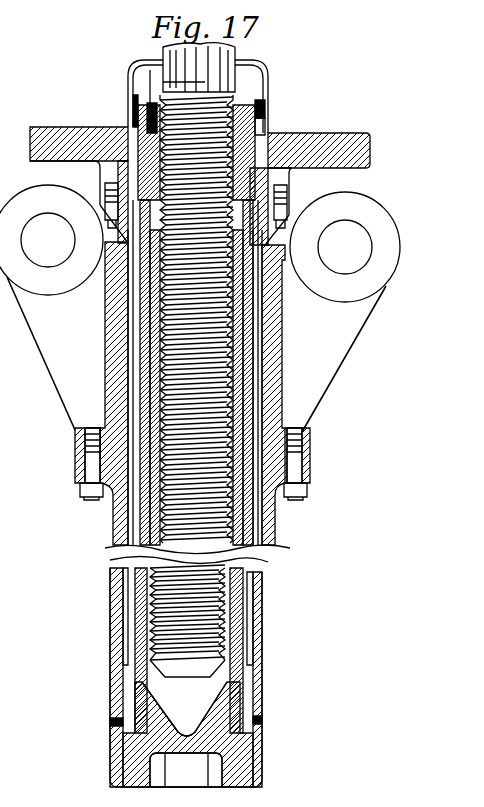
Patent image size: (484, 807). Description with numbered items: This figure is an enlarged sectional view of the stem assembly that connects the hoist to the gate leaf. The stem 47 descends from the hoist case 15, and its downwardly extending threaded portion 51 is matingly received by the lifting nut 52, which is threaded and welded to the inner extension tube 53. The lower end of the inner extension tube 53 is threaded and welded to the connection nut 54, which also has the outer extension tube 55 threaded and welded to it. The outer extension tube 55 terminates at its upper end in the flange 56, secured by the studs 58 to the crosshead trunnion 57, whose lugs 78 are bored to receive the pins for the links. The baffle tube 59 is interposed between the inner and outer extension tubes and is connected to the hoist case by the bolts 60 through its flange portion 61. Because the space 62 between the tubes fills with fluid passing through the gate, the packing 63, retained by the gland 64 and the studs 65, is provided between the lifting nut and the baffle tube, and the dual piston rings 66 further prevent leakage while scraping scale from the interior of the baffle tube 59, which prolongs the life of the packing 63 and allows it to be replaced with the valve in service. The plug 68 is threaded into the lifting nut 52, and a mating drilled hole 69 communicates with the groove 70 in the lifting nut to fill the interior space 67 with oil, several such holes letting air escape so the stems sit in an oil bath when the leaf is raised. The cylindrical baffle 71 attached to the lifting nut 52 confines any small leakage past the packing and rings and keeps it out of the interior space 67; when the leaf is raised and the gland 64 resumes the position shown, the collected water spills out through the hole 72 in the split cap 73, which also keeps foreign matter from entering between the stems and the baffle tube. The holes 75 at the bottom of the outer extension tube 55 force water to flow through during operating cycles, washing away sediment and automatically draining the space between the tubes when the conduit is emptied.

The hoist case 15 is at (357, 137).
The stem 47 is at (237, 52).
The threaded portion 51 is at (213, 600).
The nut 52 is at (262, 133).
The inner extension tube 53 is at (243, 556).
The connection nut 54 is at (240, 775).
The outer extension tube 55 is at (120, 558).
The flange 56 is at (78, 470).
The crosshead trunnion 57 is at (108, 397).
The stud 58 is at (88, 500).
The baffle tube 59 is at (140, 347).
The bolt 60 is at (110, 202).
The flange portion 61 is at (288, 205).
The space 62 is at (258, 345).
The packing 63 is at (137, 155).
The gland 64 is at (130, 76).
The stud 65 is at (140, 63).
The piston ring 66 is at (130, 187).
The interior space 67 is at (250, 385).
The filling plug 68 is at (255, 88).
The drilled hole 69 is at (300, 172).
The groove 70 is at (243, 300).
The cylindrical baffle 71 is at (150, 70).
The hole 72 is at (263, 122).
The split cap 73 is at (126, 102).
The hole 75 is at (111, 722).
The lug 78 is at (48, 346).